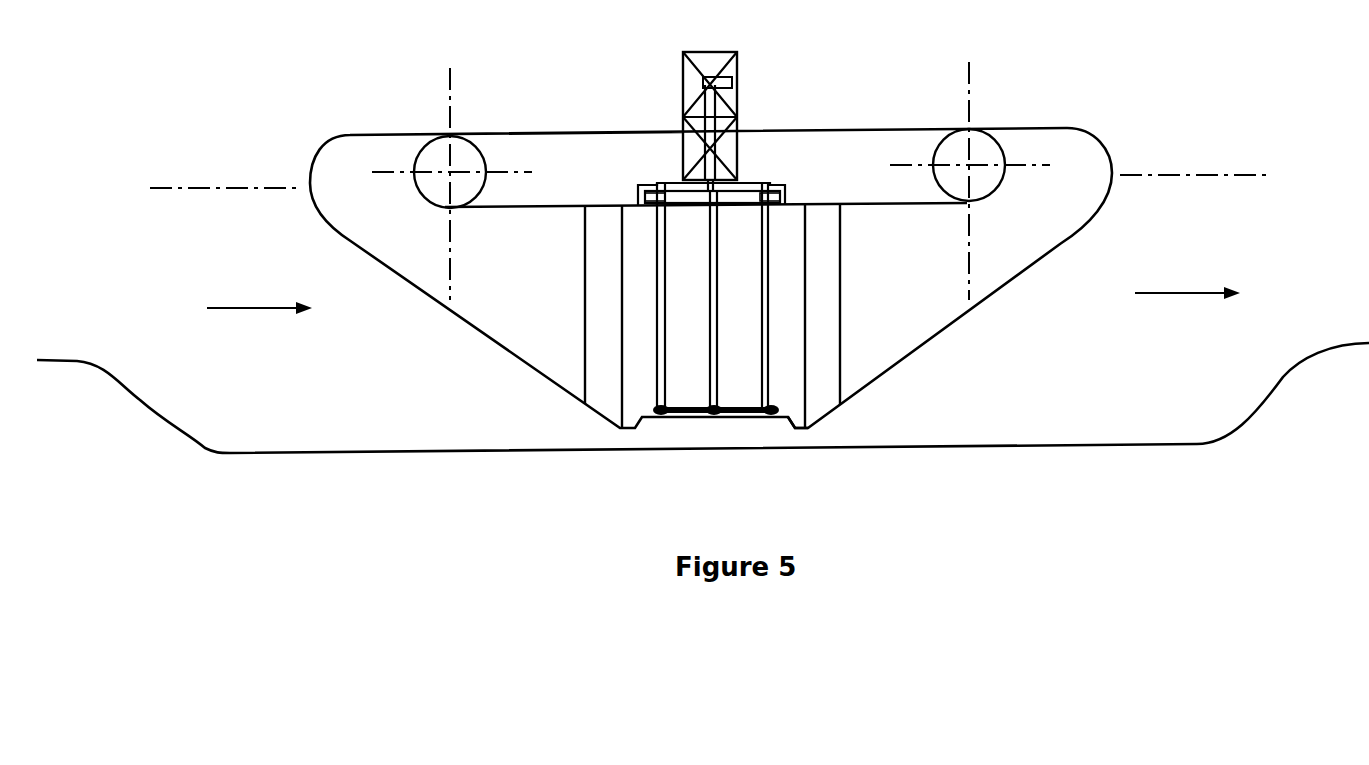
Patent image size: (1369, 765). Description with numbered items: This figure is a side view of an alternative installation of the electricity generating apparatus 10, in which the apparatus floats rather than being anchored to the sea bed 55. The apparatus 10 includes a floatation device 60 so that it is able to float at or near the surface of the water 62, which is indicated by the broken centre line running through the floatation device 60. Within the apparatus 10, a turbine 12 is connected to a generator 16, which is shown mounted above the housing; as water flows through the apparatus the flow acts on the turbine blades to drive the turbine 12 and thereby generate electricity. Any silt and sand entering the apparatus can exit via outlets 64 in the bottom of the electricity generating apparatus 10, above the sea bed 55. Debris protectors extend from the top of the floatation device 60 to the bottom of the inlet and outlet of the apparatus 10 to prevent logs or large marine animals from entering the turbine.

The electricity generating apparatus 10 is at (512, 357).
The turbine 12 is at (680, 363).
The generator 16 is at (738, 72).
The sea bed 55 is at (136, 395).
The floatation device 60 is at (960, 143).
The surface of the water 62 is at (237, 188).
The outlet 64 is at (803, 428).